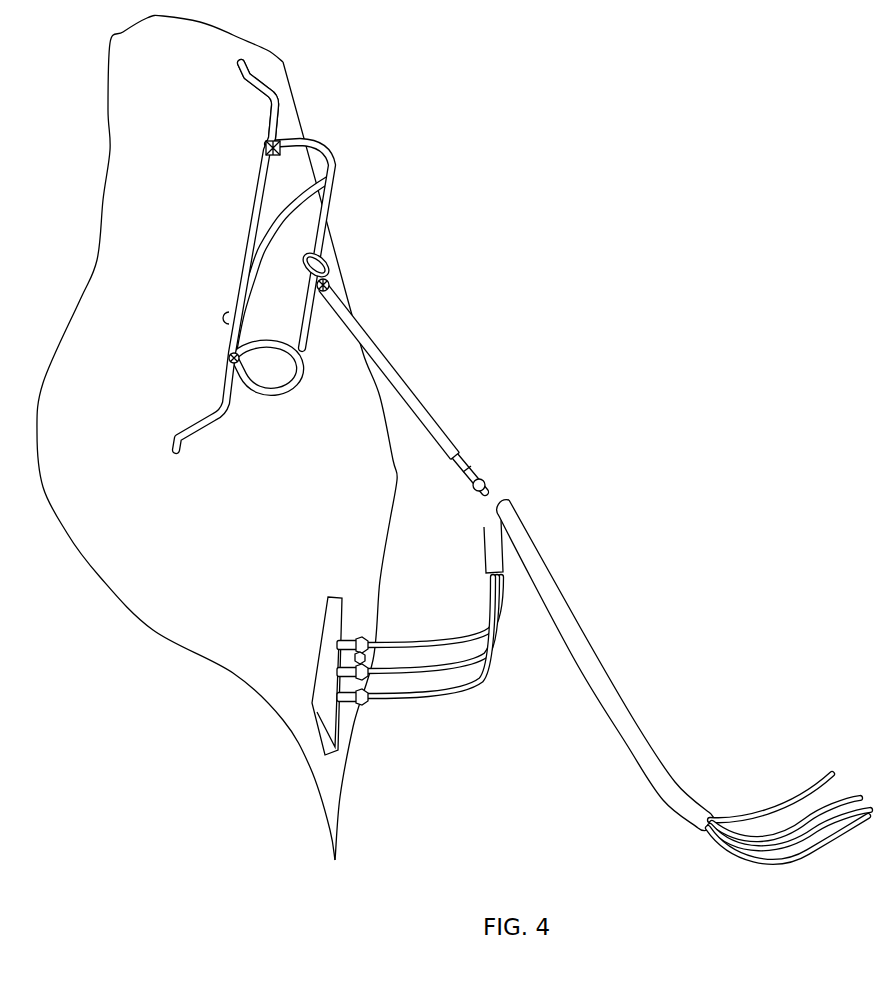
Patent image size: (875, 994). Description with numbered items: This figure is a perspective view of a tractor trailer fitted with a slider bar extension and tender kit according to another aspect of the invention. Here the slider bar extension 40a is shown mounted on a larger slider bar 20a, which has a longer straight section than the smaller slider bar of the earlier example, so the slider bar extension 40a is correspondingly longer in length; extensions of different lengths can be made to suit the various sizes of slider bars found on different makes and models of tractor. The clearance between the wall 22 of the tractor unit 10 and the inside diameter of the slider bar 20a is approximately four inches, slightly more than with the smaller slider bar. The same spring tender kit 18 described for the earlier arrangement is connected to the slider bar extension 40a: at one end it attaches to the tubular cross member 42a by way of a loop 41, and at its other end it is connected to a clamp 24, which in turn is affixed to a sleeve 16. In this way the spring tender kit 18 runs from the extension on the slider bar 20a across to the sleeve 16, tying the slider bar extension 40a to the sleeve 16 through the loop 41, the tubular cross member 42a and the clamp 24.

The tractor unit 10 is at (210, 572).
The sleeve 16 is at (634, 733).
The spring tender kit 18 is at (405, 376).
The slider bar 20a is at (253, 80).
The wall 22 is at (268, 565).
The clamp 24 is at (482, 484).
The slider bar extension 40a is at (252, 433).
The loop 41 is at (328, 267).
The tubular cross member 42a is at (333, 208).